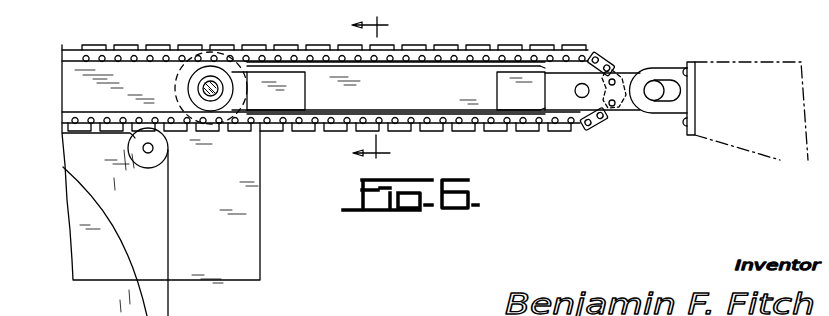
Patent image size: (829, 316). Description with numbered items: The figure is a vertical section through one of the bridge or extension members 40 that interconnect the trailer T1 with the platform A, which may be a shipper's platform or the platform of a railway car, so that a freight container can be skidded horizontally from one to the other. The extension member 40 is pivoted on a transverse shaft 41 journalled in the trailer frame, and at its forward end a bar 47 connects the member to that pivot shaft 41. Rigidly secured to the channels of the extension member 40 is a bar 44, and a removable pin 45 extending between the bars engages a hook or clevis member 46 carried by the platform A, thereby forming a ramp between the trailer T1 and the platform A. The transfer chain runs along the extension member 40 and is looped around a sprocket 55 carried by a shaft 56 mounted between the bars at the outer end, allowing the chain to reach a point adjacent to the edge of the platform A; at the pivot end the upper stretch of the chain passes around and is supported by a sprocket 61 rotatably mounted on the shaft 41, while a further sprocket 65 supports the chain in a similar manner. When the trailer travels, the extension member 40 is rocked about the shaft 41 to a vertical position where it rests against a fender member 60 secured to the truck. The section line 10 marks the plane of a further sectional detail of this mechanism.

The section line 10— 10 is at (368, 89).
The extension member 40 is at (453, 80).
The transverse shaft 41 is at (212, 84).
The bar 44 is at (521, 91).
The removable pin 45 is at (657, 89).
The hook or clevis member 46 is at (663, 120).
The bar 47 is at (305, 95).
The sprocket 55 is at (586, 68).
The shaft 56 is at (585, 88).
The fender member 60 is at (161, 180).
The sprocket 61 is at (242, 56).
The sprocket 65 is at (166, 153).
The trailer T1 is at (247, 197).
The platform A is at (751, 111).